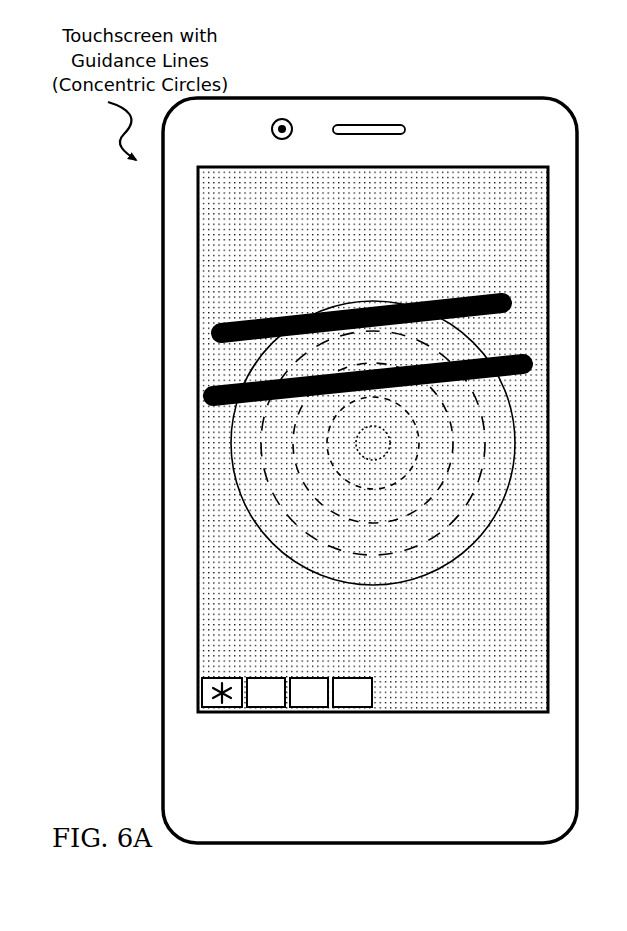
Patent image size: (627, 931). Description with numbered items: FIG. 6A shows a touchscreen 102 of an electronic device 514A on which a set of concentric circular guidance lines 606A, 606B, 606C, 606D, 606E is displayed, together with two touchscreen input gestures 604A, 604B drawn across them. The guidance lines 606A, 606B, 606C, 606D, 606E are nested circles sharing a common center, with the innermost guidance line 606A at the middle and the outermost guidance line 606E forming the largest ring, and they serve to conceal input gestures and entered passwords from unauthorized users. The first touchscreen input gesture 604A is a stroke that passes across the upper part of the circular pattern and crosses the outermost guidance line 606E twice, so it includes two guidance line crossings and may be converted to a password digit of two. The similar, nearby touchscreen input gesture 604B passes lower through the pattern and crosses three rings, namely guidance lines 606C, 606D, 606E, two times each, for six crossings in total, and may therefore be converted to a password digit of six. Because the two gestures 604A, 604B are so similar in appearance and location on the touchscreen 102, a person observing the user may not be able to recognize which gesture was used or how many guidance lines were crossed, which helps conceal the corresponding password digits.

The touchscreen 102 is at (197, 167).
The mobile device 514A is at (543, 152).
The touchscreen input gesture 604A is at (278, 324).
The touchscreen input gesture 604B is at (497, 360).
The concentric circular guidance line 606A is at (355, 446).
The concentric circular guidance line 606B is at (335, 473).
The concentric circular guidance line 606C is at (310, 493).
The concentric circular guidance line 606D is at (287, 510).
The concentric circular guidance line 606E is at (247, 520).